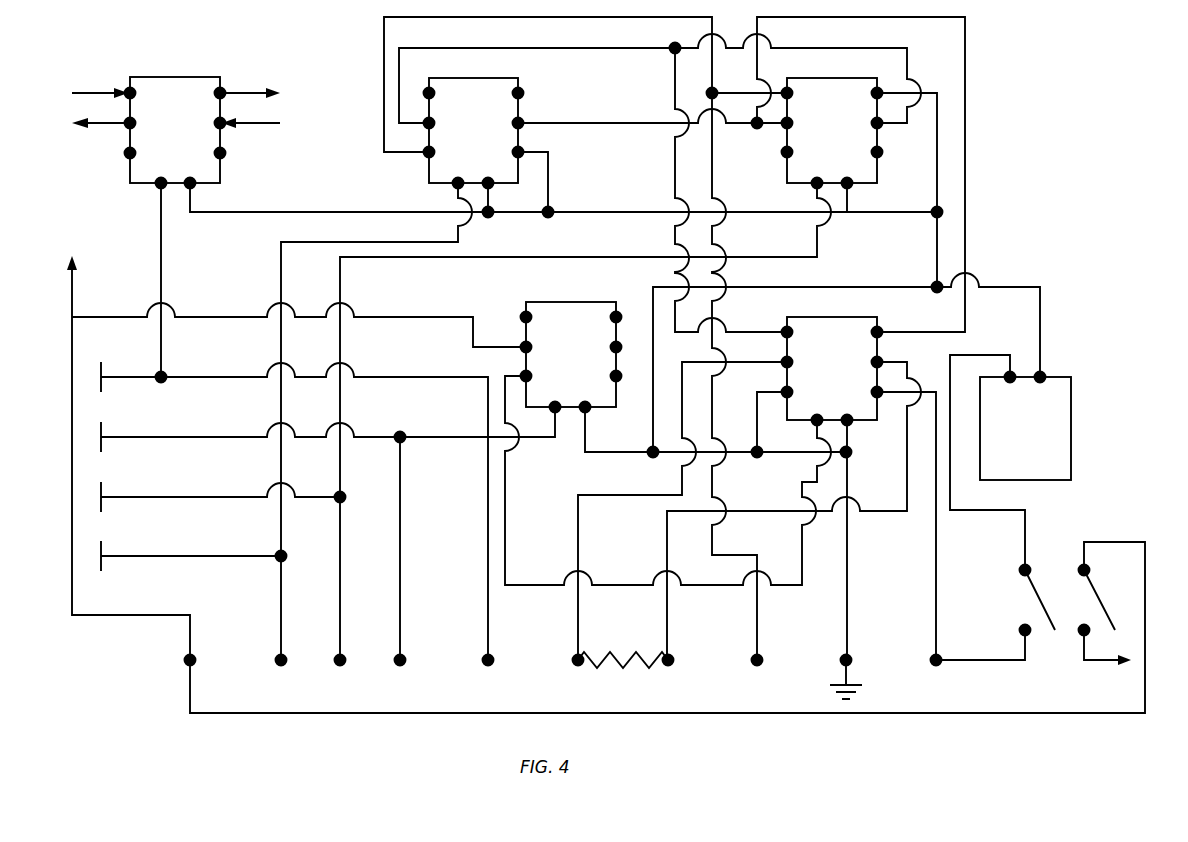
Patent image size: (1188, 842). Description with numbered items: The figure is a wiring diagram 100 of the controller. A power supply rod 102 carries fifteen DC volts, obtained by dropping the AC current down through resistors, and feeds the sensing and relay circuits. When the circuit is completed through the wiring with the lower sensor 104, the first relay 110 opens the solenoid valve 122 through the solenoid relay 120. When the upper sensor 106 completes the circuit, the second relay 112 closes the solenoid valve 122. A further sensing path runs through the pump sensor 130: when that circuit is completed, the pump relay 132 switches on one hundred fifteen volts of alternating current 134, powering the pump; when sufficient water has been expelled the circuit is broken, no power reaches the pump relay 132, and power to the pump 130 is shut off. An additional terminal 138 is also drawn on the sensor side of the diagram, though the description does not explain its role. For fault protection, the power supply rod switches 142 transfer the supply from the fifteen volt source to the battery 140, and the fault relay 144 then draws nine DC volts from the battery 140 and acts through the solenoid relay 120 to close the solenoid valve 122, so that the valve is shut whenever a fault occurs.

The wiring diagram 100 is at (311, 727).
The power supply rod 102 is at (196, 657).
The lower sensor 104 is at (285, 666).
The upper sensor 106 is at (344, 666).
The first relay 110 is at (494, 78).
The second relay 112 is at (817, 78).
The solenoid relay 120 is at (826, 317).
The solenoid valve 122 is at (638, 668).
The pump sensor 130 is at (494, 666).
The pump relay 132 is at (188, 76).
The alternating current 134 is at (89, 85).
The terminal 138 is at (405, 666).
The battery 140 is at (1071, 450).
The power supply rod switches 142 is at (1030, 565).
The fault relay 144 is at (578, 302).